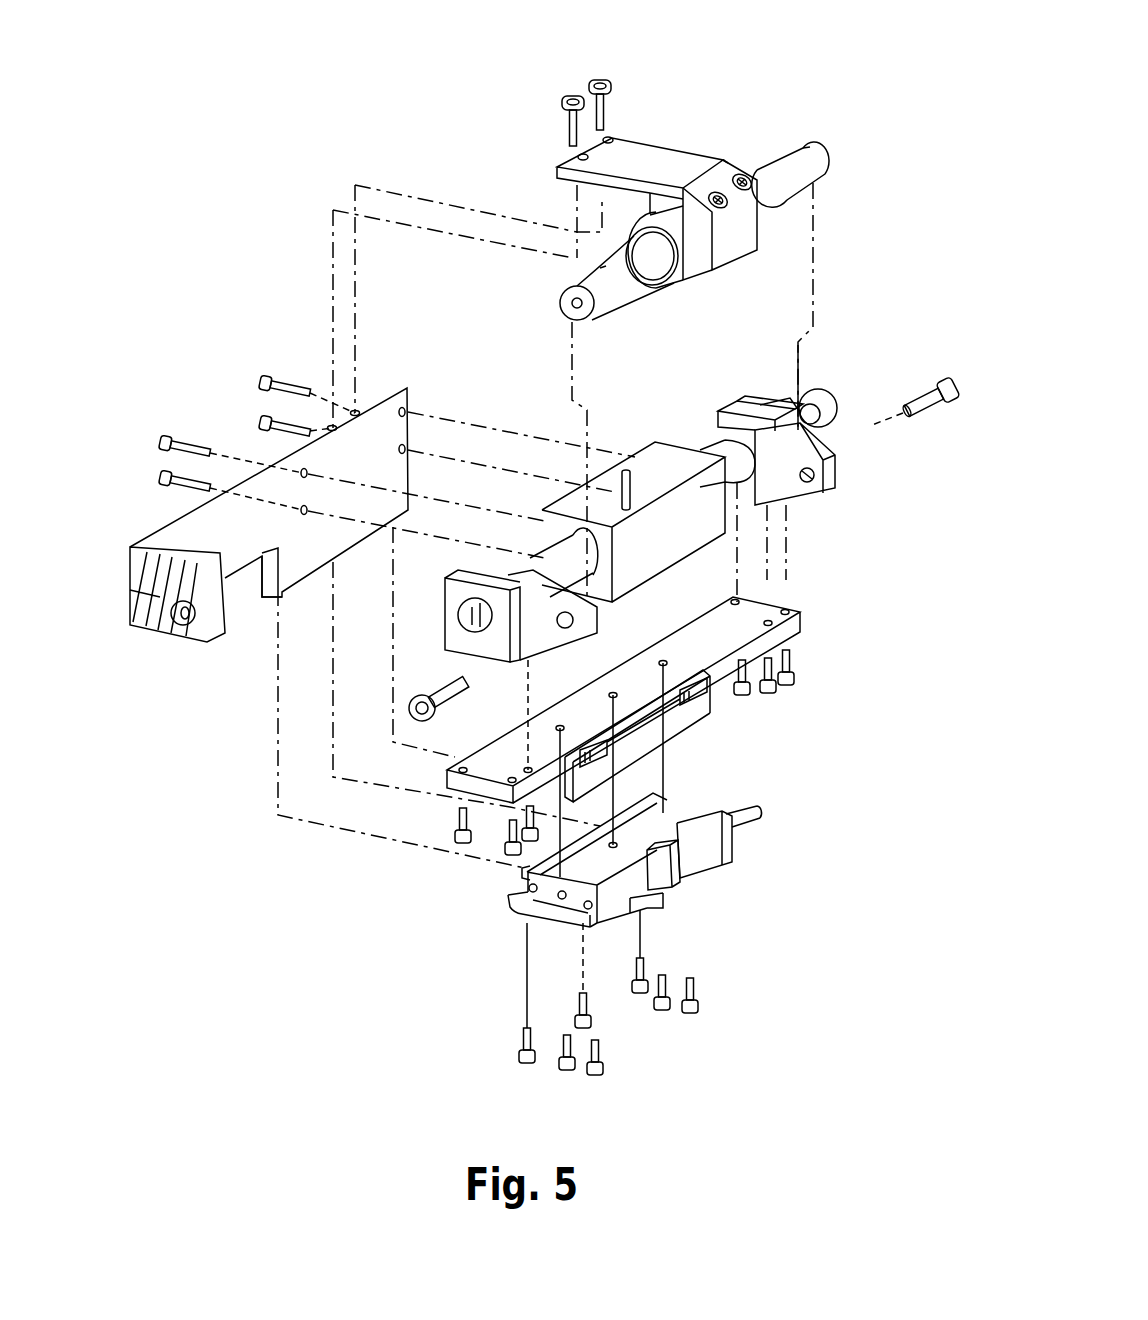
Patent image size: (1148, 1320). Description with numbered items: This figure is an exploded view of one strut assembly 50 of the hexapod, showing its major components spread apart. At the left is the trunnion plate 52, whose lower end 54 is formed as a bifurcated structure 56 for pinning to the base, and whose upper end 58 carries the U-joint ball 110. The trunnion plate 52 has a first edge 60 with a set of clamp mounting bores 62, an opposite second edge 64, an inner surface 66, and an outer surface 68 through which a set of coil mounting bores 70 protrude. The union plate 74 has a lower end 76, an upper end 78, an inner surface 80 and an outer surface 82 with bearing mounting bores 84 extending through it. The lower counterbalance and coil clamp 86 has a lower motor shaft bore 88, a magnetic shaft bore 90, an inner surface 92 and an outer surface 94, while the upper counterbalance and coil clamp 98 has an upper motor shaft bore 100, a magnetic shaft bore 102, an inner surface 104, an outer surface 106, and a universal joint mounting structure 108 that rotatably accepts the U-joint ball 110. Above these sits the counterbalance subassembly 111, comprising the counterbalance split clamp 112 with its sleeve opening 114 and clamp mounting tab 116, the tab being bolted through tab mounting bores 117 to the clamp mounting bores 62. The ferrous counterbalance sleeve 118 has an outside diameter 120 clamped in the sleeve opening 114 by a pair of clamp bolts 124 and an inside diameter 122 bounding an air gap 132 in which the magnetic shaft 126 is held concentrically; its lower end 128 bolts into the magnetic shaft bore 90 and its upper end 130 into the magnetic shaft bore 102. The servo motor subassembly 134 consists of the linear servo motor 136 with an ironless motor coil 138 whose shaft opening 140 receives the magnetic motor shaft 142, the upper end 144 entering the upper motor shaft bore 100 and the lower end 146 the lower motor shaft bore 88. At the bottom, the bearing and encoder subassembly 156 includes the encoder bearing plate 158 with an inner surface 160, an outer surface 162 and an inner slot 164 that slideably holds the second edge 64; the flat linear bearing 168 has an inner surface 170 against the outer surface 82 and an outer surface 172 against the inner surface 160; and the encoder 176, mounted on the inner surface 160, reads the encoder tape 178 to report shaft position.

The strut assembly 50 is at (222, 60).
The trunnion plate 52 is at (198, 416).
The lower end 54 is at (135, 560).
The bifurcated structure 56 is at (132, 613).
The upper end 58 is at (412, 414).
The first edge 60 is at (388, 398).
The clamp mounting bores 62 is at (367, 393).
The second edge 64 is at (312, 572).
The inner surface 66 is at (390, 475).
The outer surface 68 is at (175, 513).
The coil mounting bores 70 is at (308, 477).
The union plate 74 is at (727, 683).
The lower end 76 is at (470, 787).
The upper end 78 is at (800, 622).
The inner surface 80 is at (742, 618).
The outer surface 82 is at (700, 723).
The bearing mounting bores 84 is at (790, 627).
The lower counterbalance and coil clamp 86 is at (608, 616).
The lower motor shaft bore 88 is at (448, 650).
The magnetic shaft bore 90 is at (570, 623).
The inner surface 92 is at (483, 580).
The outer surface 94 is at (490, 645).
The upper counterbalance and coil clamp 98 is at (813, 510).
The upper motor shaft bore 100 is at (767, 407).
The magnetic shaft bore 102 is at (810, 487).
The inner surface 104 is at (723, 413).
The outer surface 106 is at (790, 400).
The universal joint mounting structure 108 is at (810, 432).
The U-joint ball 110 is at (828, 412).
The counterbalance subassembly 111 is at (757, 82).
The counterbalance split clamp 112 is at (737, 240).
The sleeve opening 114 is at (683, 207).
The clamp mounting tab 116 is at (660, 157).
The tab mounting bores 117 is at (606, 135).
The counterbalance sleeve 118 is at (813, 229).
The outside diameter 120 is at (787, 200).
The inside diameter 122 is at (600, 270).
The clamp bolts 124 is at (735, 170).
The magnetic shaft 126 is at (803, 157).
The lower end 128 is at (587, 318).
The upper end 130 is at (823, 167).
The air gap 132 is at (667, 283).
The servo motor subassembly 134 is at (597, 481).
The linear servo motor 136 is at (629, 510).
The ironless motor coil 138 is at (680, 430).
The shaft opening 140 is at (560, 542).
The magnetic motor shaft 142 is at (577, 563).
The upper end 144 is at (832, 393).
The lower end 146 is at (458, 616).
The bearing and encoder subassembly 156 is at (503, 913).
The encoder bearing plate 158 is at (583, 923).
The inner surface 160 is at (507, 893).
The outer surface 162 is at (593, 935).
The inner slot 164 is at (513, 868).
The flat linear bearing 168 is at (819, 792).
The inner surface 170 is at (700, 793).
The outer surface 172 is at (568, 912).
The encoder 176 is at (700, 847).
The encoder tape 178 is at (700, 888).